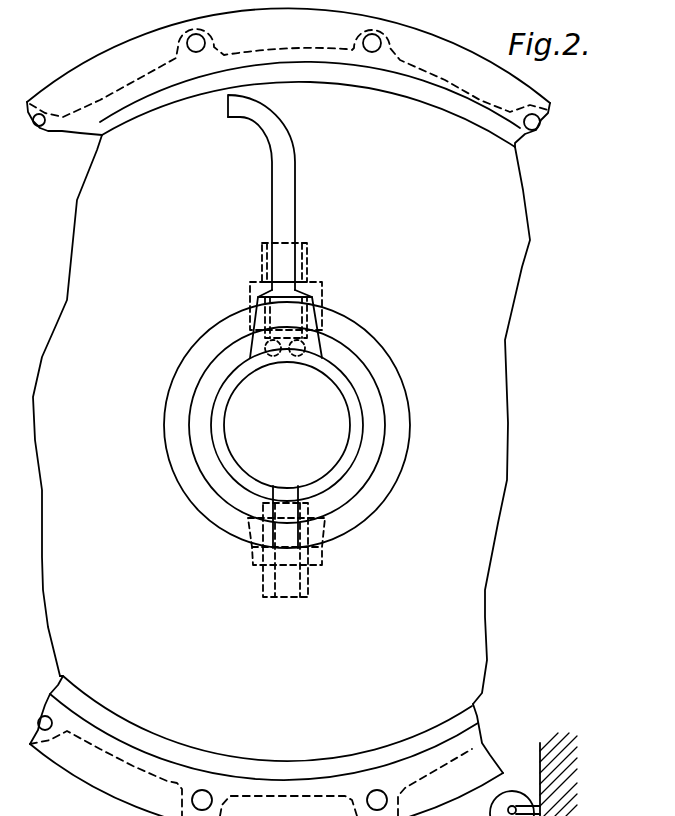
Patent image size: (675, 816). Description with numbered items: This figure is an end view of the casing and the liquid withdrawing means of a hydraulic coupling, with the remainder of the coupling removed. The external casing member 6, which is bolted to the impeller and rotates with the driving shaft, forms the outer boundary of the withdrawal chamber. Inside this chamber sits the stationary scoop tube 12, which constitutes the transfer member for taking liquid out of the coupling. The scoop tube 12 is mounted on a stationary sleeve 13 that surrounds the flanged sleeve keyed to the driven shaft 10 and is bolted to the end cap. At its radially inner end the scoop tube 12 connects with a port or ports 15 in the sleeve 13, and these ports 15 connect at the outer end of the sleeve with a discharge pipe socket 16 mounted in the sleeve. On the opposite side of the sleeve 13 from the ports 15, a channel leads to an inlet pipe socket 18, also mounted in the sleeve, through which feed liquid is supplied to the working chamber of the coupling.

The external casing member 6 is at (288, 412).
The driven shaft 10 is at (287, 425).
The scoop tube 12 is at (288, 177).
The stationary sleeve 13 is at (310, 343).
The ports 15 is at (290, 363).
The discharge pipe socket 16 is at (306, 253).
The inlet pipe socket 18 is at (308, 590).